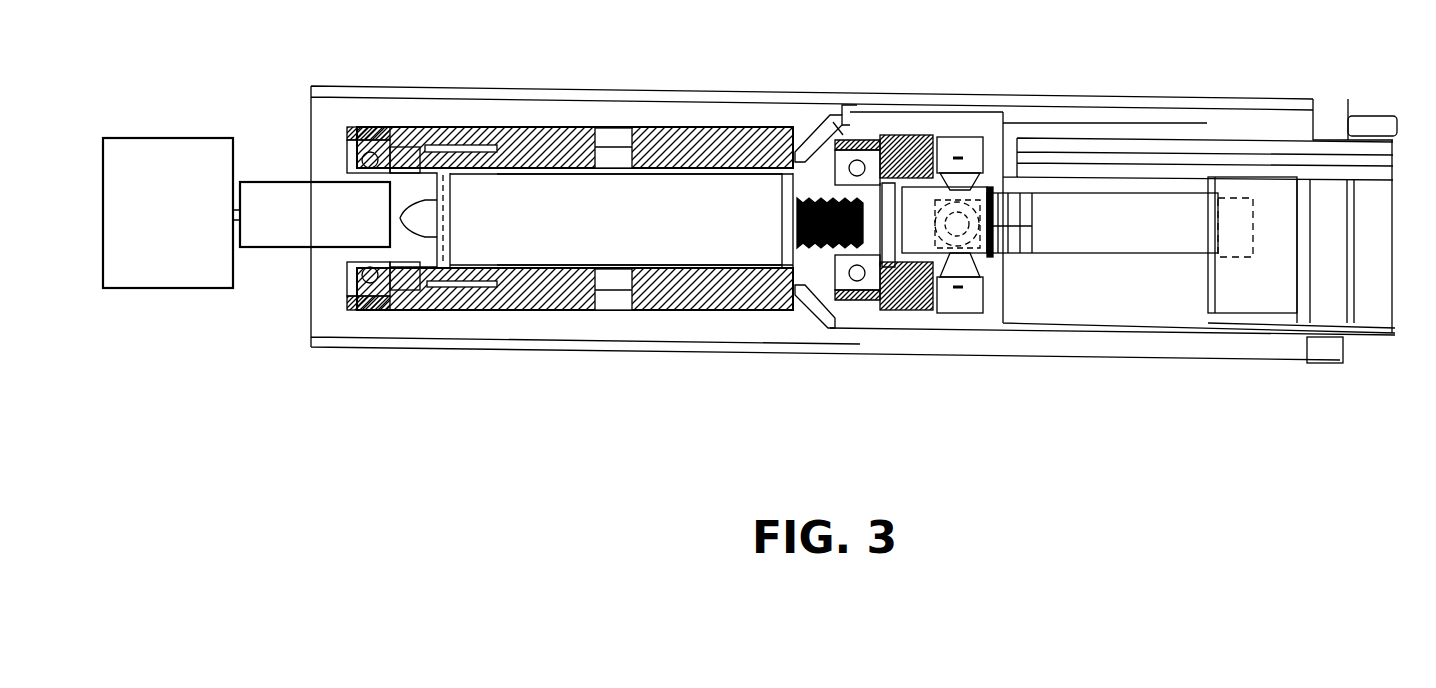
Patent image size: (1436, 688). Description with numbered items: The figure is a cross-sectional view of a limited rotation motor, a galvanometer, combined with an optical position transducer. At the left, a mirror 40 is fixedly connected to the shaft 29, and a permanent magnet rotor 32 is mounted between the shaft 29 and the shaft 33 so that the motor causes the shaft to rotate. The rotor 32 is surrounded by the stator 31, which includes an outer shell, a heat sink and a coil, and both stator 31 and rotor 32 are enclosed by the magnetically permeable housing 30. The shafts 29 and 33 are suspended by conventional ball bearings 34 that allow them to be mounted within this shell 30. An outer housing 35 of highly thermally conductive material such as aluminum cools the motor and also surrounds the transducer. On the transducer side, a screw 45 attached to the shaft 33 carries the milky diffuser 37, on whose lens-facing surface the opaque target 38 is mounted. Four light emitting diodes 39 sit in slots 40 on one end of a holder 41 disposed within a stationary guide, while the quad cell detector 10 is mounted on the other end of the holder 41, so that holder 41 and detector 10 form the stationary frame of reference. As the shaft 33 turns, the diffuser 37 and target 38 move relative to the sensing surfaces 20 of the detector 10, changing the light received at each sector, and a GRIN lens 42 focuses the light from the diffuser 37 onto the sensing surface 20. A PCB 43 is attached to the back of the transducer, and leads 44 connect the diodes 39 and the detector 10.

The quad cell detector 10 is at (1275, 300).
The sensing surface 20 is at (1240, 210).
The shaft 29 is at (330, 233).
The magnetically permeable housing 30 is at (497, 310).
The stator 31 is at (600, 325).
The permanent magnet rotor 32 is at (683, 197).
The shaft 33 is at (797, 285).
The ball bearings 34 is at (337, 288).
The housing 35 is at (707, 343).
The diffuser 37 is at (915, 240).
The opaque target 38 is at (1198, 178).
The light emitting diodes 39 is at (960, 150).
The mirror 40 is at (160, 155).
The holder 41 is at (1098, 303).
The GRIN lens 42 is at (1183, 235).
The PCB 43 is at (1325, 348).
The leads 44 is at (1273, 150).
The screw 45 is at (833, 122).